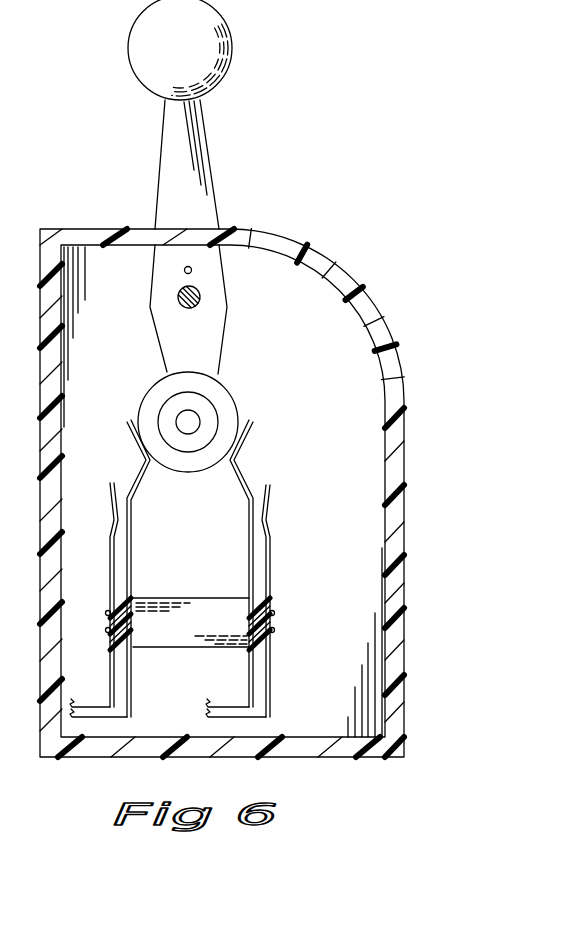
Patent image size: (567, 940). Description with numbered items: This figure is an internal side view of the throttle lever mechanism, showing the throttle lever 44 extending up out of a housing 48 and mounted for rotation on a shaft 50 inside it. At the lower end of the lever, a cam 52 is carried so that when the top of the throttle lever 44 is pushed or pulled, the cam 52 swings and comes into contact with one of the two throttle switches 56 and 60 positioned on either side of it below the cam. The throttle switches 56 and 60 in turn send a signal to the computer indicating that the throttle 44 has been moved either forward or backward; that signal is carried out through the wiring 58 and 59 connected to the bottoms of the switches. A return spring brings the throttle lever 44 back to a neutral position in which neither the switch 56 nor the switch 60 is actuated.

The throttle lever 44 is at (197, 147).
The housing 48 is at (404, 397).
The shaft 50 is at (200, 303).
The cam 52 is at (236, 394).
The throttle switch 56 is at (271, 538).
The wiring 58 is at (98, 694).
The wiring 59 is at (236, 695).
The throttle switch 60 is at (133, 520).